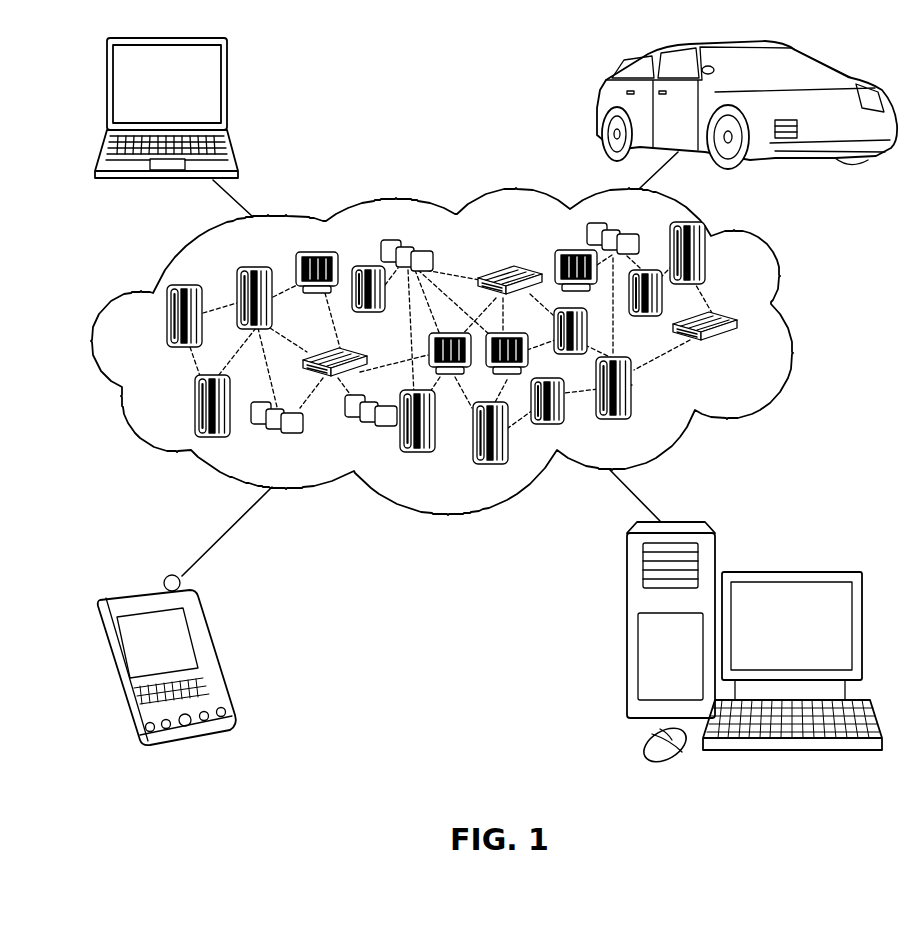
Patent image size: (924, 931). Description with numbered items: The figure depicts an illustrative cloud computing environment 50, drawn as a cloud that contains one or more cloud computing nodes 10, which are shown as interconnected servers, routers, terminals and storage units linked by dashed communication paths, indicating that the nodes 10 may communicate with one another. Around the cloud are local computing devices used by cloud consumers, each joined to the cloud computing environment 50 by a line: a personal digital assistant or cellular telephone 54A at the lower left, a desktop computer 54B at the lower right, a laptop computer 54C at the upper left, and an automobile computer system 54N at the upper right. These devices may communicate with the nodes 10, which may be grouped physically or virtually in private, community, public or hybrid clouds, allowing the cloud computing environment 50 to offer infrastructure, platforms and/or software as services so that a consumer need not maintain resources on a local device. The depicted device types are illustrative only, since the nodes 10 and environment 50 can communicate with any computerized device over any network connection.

The cloud computing nodes 10 is at (494, 403).
The cloud computing environment 50 is at (790, 325).
The personal digital assistant or cellular telephone 54A is at (217, 653).
The desktop computer 54B is at (788, 570).
The laptop computer 54C is at (227, 92).
The automobile computer system 54N is at (603, 102).